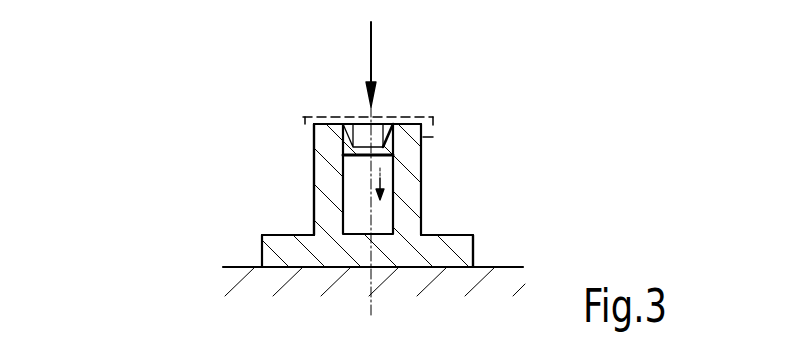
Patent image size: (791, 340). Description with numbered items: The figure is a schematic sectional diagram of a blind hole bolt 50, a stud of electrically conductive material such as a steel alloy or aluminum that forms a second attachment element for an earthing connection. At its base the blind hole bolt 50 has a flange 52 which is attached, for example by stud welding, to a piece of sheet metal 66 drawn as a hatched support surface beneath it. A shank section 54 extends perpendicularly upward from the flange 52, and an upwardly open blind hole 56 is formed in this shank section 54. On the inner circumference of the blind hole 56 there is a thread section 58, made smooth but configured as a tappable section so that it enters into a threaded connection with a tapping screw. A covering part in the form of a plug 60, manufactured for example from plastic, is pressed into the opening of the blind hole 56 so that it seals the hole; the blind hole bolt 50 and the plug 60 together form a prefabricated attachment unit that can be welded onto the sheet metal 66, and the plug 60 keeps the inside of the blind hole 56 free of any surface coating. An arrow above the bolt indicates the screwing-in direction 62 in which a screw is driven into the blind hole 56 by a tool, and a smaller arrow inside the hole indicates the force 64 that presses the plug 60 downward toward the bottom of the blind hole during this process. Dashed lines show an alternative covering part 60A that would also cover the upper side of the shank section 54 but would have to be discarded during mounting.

The blind hole bolt 50 is at (474, 245).
The flange 52 is at (268, 233).
The shank section 54 is at (340, 218).
The blind hole 56 is at (322, 172).
The thread section 58 is at (314, 136).
The plug 60 is at (390, 132).
The covering part 60A is at (323, 117).
The screwing-in direction 62 is at (371, 40).
The force 64 is at (383, 180).
The piece of sheet metal 66 is at (487, 280).